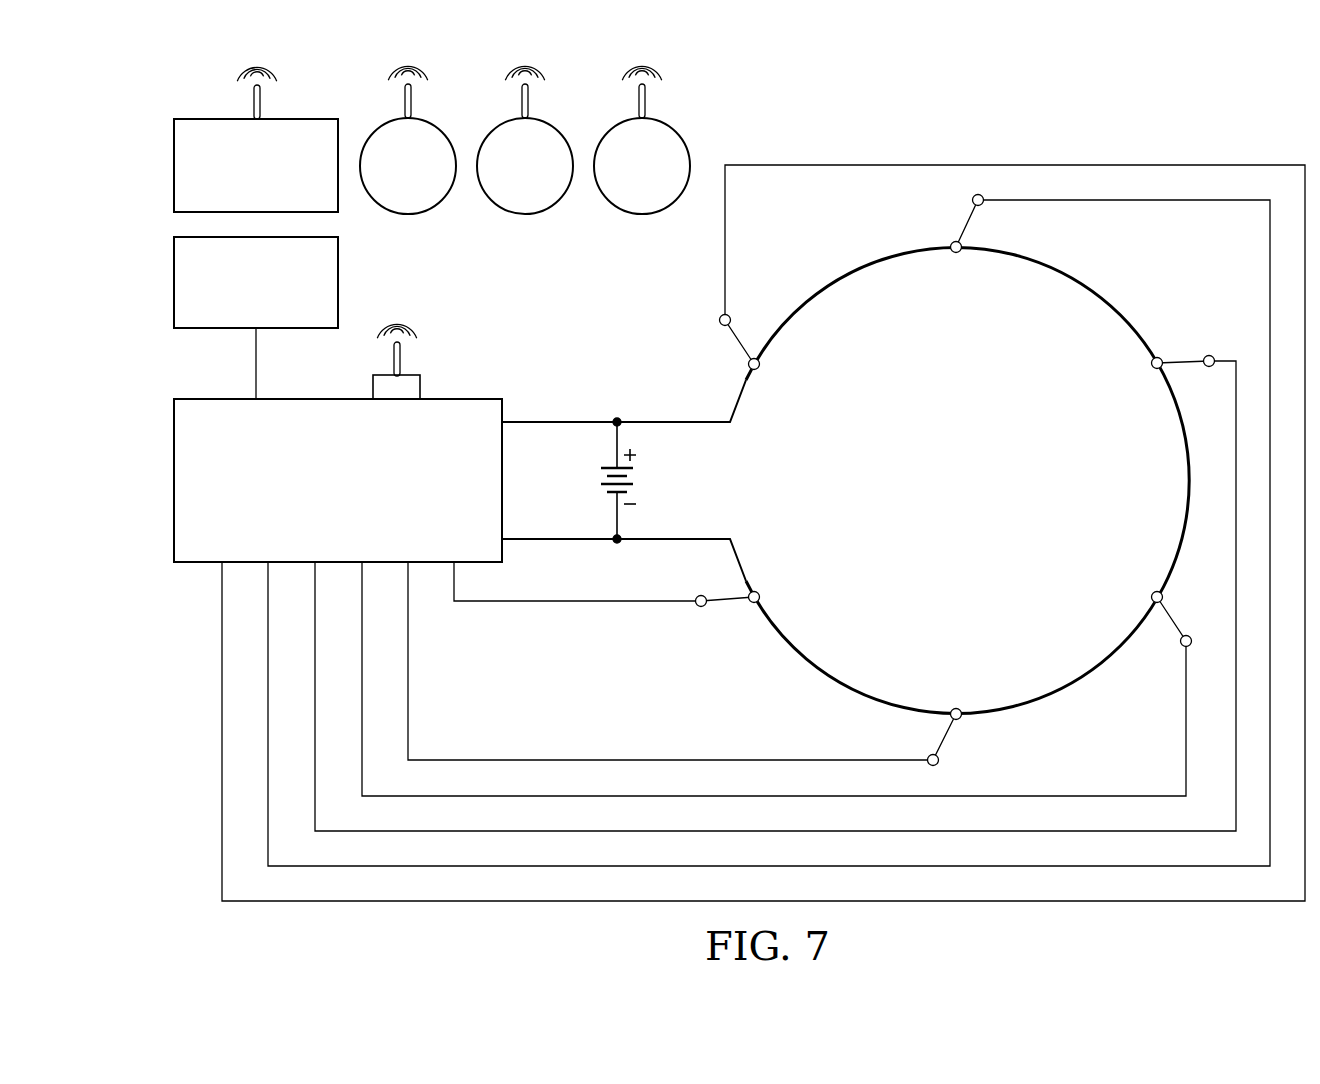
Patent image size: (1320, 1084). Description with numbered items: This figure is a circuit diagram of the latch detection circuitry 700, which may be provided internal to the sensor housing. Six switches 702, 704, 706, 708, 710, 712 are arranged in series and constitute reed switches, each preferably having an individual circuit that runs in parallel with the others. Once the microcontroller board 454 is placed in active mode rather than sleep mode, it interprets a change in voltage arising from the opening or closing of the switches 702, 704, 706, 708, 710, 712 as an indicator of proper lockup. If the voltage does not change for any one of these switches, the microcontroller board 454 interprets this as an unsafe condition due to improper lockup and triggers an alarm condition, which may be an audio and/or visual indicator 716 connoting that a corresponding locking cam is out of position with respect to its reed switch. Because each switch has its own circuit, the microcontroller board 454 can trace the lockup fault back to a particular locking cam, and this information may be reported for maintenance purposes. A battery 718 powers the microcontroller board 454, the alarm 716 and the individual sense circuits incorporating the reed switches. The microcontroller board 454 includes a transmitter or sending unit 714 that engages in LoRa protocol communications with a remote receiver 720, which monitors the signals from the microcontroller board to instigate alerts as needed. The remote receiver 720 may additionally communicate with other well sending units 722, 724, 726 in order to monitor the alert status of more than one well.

The latch detection circuitry 700 is at (1195, 101).
The switch 702 is at (733, 338).
The switch 704 is at (967, 220).
The switch 706 is at (1183, 357).
The switch 708 is at (1173, 619).
The switch 710 is at (948, 739).
The switch 712 is at (731, 606).
The transmitter or sending unit 714 is at (373, 388).
The audio and/or visual indicator 716 is at (174, 281).
The battery 718 is at (598, 478).
The remote receiver 720 is at (174, 166).
The well sending unit 722 is at (389, 122).
The well sending unit 724 is at (506, 122).
The well sending unit 726 is at (623, 122).
The microcontroller board 454 is at (174, 480).